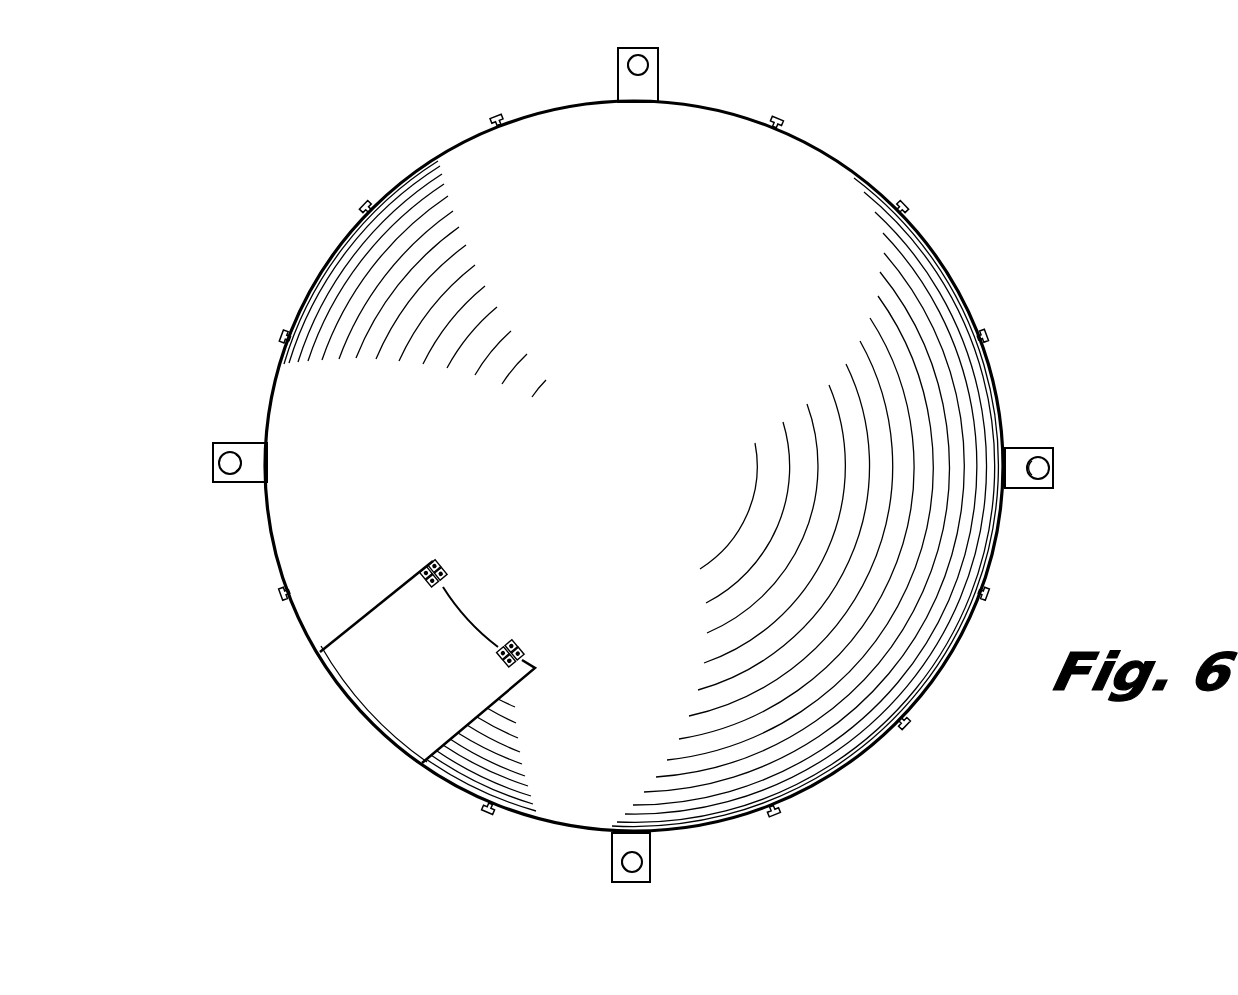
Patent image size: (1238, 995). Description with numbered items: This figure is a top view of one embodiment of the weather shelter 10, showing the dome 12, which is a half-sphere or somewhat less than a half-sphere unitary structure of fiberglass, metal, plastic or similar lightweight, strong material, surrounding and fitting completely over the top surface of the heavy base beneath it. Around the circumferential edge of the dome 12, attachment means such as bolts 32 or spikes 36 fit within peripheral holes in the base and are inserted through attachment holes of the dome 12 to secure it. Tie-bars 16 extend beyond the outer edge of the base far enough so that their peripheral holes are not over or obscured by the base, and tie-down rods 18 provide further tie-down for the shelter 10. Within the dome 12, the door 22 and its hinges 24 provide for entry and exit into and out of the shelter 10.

The weather shelter 10 is at (312, 135).
The dome 12 is at (503, 158).
The tie-bars 16 is at (257, 473).
The tie-down rods 18 is at (222, 452).
The door 22 is at (387, 613).
The hinges 24 is at (517, 642).
The bolts 32 is at (785, 117).
The spikes 36 is at (903, 197).